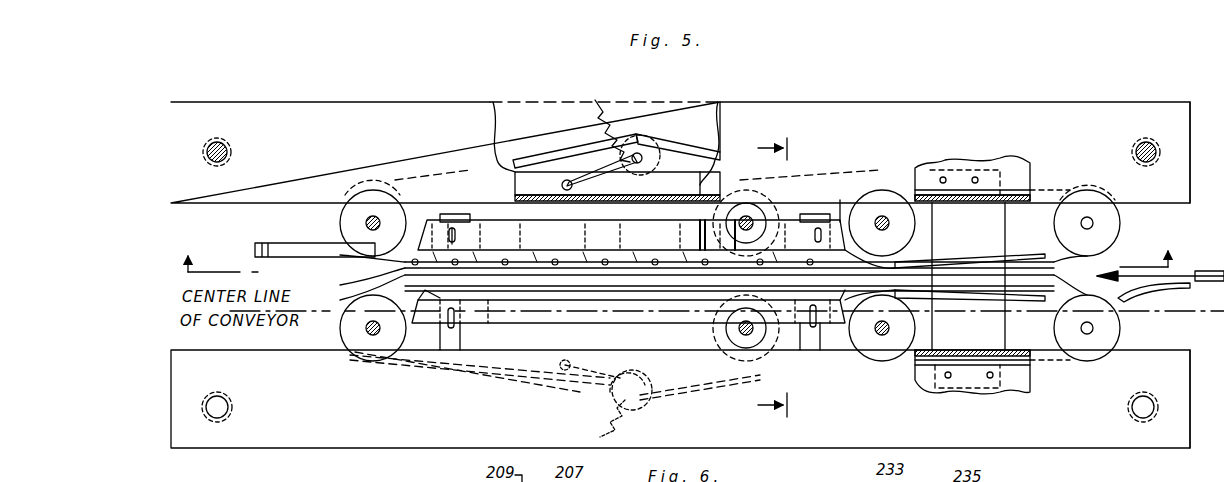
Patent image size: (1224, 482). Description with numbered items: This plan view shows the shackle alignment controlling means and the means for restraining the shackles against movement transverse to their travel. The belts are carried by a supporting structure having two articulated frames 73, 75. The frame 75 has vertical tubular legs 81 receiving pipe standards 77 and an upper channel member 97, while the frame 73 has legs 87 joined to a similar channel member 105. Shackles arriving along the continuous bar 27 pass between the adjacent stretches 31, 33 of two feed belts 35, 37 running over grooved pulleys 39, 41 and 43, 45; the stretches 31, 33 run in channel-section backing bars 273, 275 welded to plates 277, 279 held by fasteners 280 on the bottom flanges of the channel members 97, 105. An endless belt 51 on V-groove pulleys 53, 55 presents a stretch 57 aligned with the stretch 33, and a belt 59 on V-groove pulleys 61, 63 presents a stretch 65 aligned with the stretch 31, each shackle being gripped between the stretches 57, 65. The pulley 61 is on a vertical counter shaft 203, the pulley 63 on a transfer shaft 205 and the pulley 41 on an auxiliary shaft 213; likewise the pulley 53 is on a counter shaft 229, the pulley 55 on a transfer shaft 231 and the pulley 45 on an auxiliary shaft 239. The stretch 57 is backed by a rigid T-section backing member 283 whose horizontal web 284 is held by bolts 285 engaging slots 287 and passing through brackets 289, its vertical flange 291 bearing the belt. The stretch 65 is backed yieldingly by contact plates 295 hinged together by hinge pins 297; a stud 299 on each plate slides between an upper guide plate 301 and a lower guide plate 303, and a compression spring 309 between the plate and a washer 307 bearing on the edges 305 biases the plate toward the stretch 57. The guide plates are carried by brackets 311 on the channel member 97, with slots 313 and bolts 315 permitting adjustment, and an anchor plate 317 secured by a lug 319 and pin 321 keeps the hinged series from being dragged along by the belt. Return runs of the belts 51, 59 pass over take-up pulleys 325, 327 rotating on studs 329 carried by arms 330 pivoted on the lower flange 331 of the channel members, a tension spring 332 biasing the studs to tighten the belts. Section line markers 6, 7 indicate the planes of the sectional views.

The upper channel member 97 is at (1062, 118).
The frame 75 is at (1197, 163).
The standards 77 is at (216, 148).
The tubular legs 81 is at (228, 140).
The lower guide plate 303 is at (555, 172).
The lower flange 331 is at (548, 160).
The studs 329 is at (655, 155).
The take-up pulley 327 is at (655, 150).
The arms 330 is at (605, 175).
The tension spring 332 is at (630, 130).
The belt 59 is at (722, 165).
The upper guide plate 301 is at (622, 172).
The vertical auxiliary shaft 213 is at (715, 195).
The pulley 41 is at (746, 200).
The section line 6- 6 is at (766, 277).
The section line 7- 7 is at (676, 248).
The V-groove pulley 61 is at (345, 218).
The vertical counter shaft 203 is at (368, 232).
The V-groove pulley 53 is at (352, 312).
The vertical counter shaft 229 is at (365, 330).
The slots 313 is at (470, 215).
The vertical auxiliary shaft 239 is at (738, 330).
The V-groove pulley 63 is at (915, 230).
The lug 319 is at (880, 228).
The V-groove pulley 55 is at (900, 312).
The vertical transfer shaft 231 is at (890, 328).
The idler pulley 39 is at (1115, 218).
The idler pulley 43 is at (1112, 313).
The continuous bar 27 is at (1175, 290).
The stretch 31 is at (1048, 262).
The backing bar 273 is at (1015, 255).
The plate 277 is at (992, 213).
The stretch 33 is at (1055, 296).
The backing bar 275 is at (1015, 298).
The plate 279 is at (995, 333).
The feed belt 35 is at (1050, 190).
The feed belt 37 is at (1052, 365).
The stretch 57 is at (622, 298).
The stretch 65 is at (598, 262).
The hinge pins 297 is at (455, 265).
The washers 307 is at (575, 268).
The compression springs 309 is at (540, 278).
The vertical flange 291 is at (658, 292).
The contact plates 295 is at (410, 262).
The edges 305 is at (565, 225).
The bolts 315 is at (452, 224).
The brackets 311 is at (468, 222).
The pin 321 is at (855, 222).
The studs 299 is at (435, 182).
The vertical transfer shaft 205 is at (890, 200).
The anchor plate 317 is at (858, 265).
The horizontal web 284 is at (575, 320).
The backing member 283 is at (580, 320).
The bolts 285 is at (458, 312).
The brackets 289 is at (462, 336).
The slots 287 is at (438, 305).
The fasteners 280 is at (975, 178).
The frame 73 is at (165, 410).
The legs 87 is at (220, 420).
The channel member 105 is at (1148, 440).
The endless belt 51 is at (472, 380).
The take-up pulley 325 is at (650, 385).
The pulley 45 is at (735, 372).